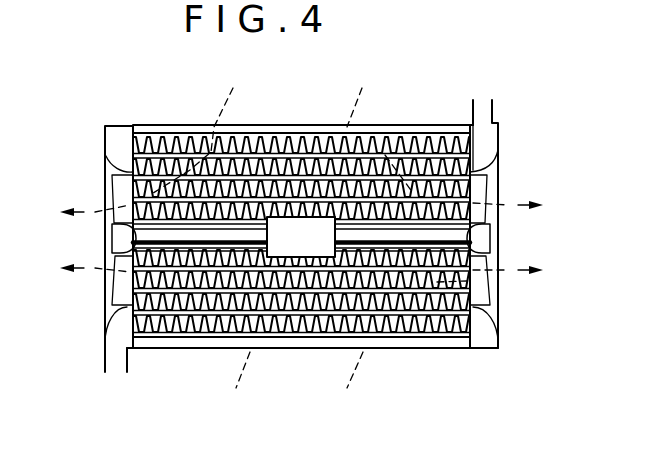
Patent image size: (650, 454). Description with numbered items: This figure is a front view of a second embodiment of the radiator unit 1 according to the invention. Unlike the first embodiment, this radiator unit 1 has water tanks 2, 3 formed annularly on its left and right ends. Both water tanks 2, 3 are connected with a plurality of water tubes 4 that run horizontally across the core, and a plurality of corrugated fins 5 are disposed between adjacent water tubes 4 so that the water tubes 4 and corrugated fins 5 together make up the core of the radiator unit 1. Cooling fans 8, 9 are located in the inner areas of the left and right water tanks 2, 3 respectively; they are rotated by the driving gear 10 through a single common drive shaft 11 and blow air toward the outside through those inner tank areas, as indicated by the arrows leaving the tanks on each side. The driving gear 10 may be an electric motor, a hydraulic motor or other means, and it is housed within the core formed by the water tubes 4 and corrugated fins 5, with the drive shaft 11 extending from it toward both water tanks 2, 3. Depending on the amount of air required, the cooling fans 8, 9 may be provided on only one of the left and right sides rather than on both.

The heat exchanger 1 is at (400, 118).
The water tank 2 is at (113, 329).
The water tank 3 is at (483, 140).
The water tubes 4 is at (179, 137).
The corrugated fins 5 is at (272, 137).
The cooling fan 8 is at (115, 192).
The cooling fan 9 is at (480, 188).
The driving gear 10 is at (312, 250).
The drive shaft 11 is at (393, 242).